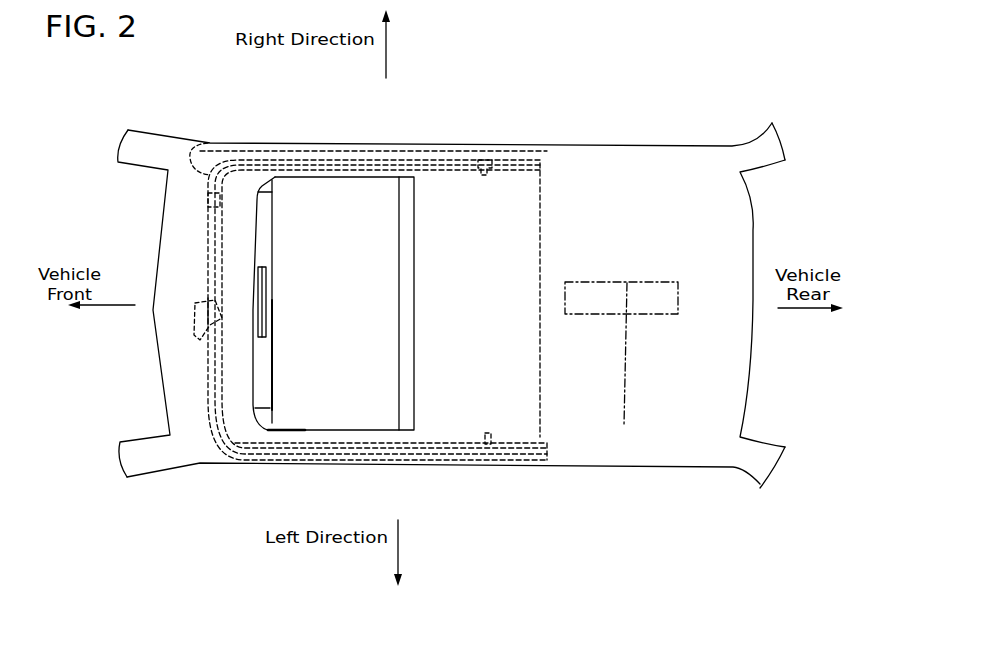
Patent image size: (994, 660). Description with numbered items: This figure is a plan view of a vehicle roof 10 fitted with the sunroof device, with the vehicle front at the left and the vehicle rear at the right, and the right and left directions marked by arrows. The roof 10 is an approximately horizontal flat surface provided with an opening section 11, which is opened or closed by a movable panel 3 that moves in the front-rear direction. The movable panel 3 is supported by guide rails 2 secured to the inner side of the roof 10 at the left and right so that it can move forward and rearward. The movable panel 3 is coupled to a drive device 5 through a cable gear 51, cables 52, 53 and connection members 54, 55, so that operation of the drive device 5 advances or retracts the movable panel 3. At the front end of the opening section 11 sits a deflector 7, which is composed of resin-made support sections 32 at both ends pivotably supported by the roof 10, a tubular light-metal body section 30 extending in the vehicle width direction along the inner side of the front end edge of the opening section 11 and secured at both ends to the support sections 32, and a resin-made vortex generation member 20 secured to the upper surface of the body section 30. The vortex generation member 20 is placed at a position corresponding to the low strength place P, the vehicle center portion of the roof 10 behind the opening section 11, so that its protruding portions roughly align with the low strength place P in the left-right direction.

The guide rails 2 is at (547, 162).
The movable panel 3 is at (450, 225).
The drive device 5 is at (172, 329).
The deflector 7 is at (282, 362).
The roof 10 is at (627, 188).
The opening section 11 is at (355, 216).
The vortex generation member 20 is at (267, 289).
The body section 30 is at (267, 228).
The support sections 32 is at (266, 182).
The cable gear 51 is at (197, 298).
The cable 52 is at (208, 143).
The cable 53 is at (215, 182).
The connection member 54 is at (486, 445).
The connection member 55 is at (484, 158).
The low strength place P is at (621, 368).